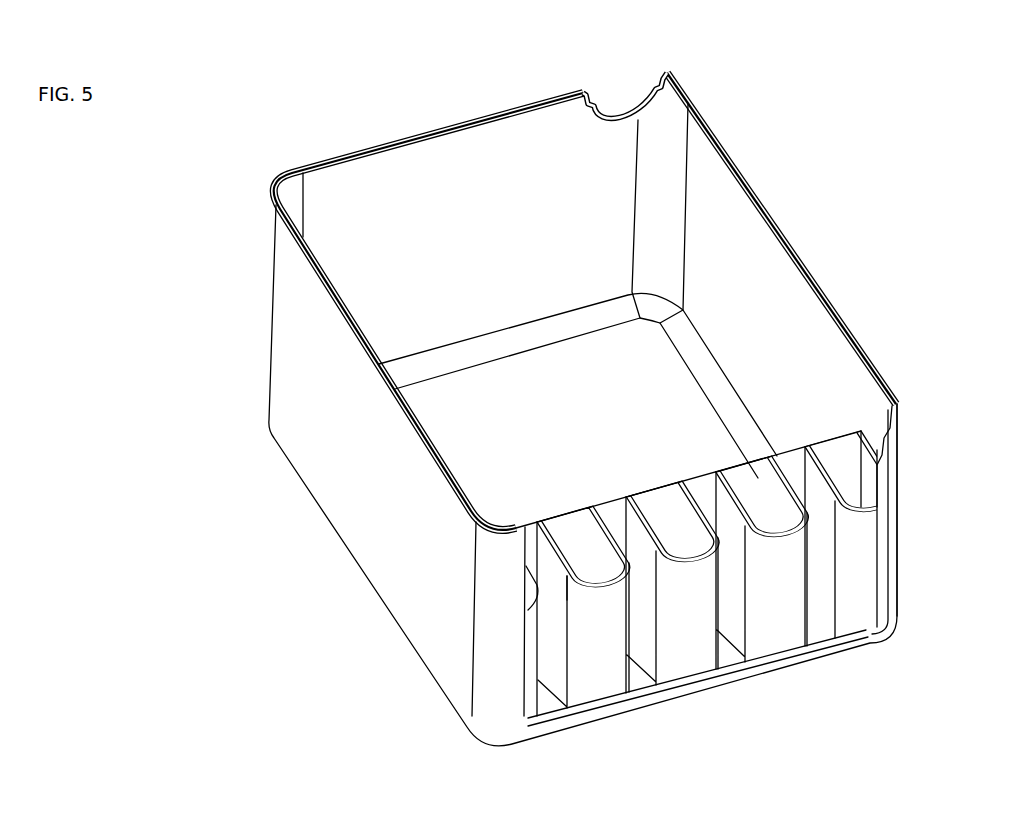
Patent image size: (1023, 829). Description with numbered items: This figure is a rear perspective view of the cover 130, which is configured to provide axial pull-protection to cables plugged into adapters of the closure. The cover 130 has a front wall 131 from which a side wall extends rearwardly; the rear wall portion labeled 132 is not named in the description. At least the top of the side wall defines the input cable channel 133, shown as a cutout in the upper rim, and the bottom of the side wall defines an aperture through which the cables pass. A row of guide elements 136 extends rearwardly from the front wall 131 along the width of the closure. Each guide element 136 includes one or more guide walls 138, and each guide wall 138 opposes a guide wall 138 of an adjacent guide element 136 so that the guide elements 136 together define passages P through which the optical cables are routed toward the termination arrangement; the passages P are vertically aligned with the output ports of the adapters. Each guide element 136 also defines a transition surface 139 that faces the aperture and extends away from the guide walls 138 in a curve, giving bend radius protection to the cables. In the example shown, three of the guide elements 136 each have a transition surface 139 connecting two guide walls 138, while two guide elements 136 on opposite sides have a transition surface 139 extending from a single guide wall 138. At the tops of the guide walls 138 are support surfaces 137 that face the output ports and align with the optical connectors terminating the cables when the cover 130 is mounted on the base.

The cover 130 is at (843, 307).
The front wall 131 is at (553, 397).
The rear wall 132 is at (485, 215).
The input cable channel 133 is at (605, 118).
The guide element 136 is at (727, 457).
The support surface 137 is at (538, 520).
The guide wall 138 is at (793, 486).
The transition surface 139 is at (857, 573).
The passage P is at (552, 612).